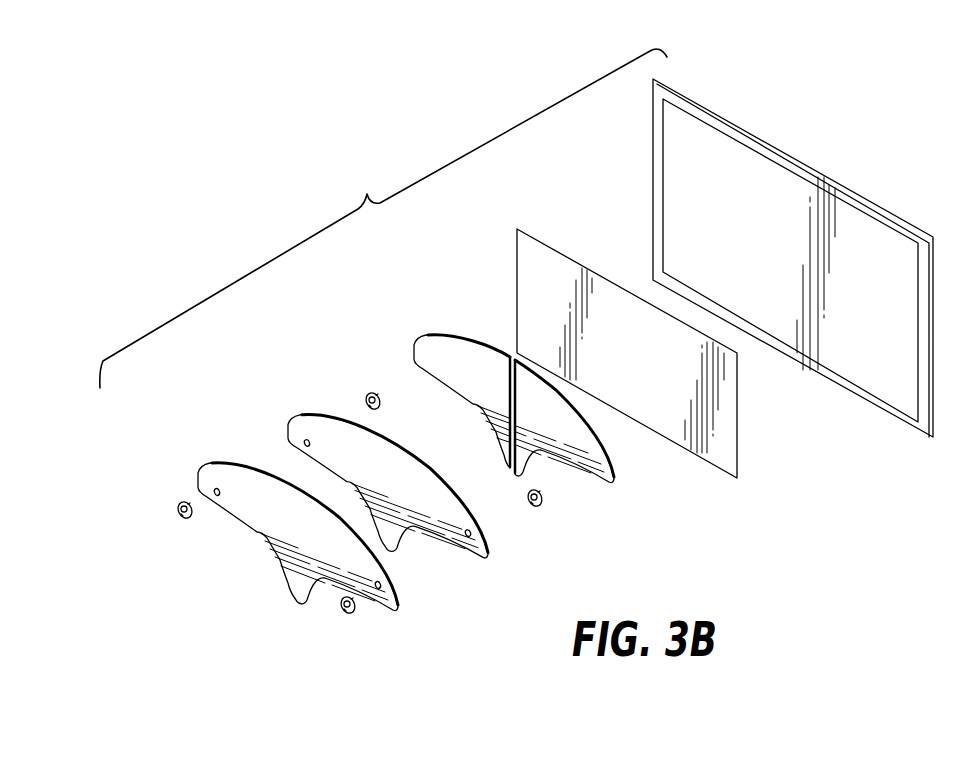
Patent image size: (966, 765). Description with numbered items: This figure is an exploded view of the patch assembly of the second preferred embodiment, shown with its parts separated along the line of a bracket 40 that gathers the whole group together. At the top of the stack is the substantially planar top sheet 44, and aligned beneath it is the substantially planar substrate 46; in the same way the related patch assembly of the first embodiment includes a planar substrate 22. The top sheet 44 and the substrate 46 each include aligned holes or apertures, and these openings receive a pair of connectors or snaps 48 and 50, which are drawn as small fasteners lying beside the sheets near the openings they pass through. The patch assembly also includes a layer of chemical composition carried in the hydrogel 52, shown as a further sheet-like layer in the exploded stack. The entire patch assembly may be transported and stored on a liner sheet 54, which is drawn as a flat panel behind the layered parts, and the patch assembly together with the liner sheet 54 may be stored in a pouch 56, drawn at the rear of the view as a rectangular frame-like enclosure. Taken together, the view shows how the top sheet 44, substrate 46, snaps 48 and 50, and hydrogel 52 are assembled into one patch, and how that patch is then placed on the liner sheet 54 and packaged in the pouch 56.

The bracket assembly 40 is at (383, 218).
The substrate 22 is at (430, 547).
The top sheet 44 is at (215, 477).
The substrate 46 is at (303, 427).
The connector or snap 48 is at (184, 522).
The connector or snap 50 is at (345, 615).
The hydrogel 52 is at (437, 360).
The liner sheet 54 is at (723, 455).
The pouch 56 is at (893, 378).